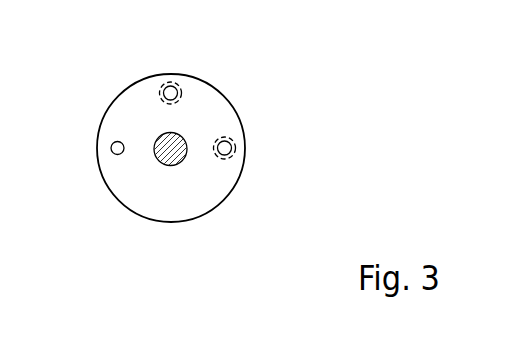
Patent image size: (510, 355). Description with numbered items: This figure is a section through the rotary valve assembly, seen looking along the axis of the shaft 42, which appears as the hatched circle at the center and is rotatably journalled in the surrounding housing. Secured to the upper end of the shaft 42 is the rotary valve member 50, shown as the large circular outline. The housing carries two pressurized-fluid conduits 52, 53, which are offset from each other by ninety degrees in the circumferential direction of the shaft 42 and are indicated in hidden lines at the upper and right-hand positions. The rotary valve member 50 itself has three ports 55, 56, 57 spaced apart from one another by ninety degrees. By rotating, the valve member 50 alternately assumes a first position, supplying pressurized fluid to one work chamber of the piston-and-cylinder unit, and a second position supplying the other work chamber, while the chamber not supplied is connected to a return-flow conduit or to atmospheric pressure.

The rotary valve member 50 is at (232, 108).
The shaft 42 is at (172, 166).
The port 56 is at (167, 87).
The pressurized-fluid conduit 53 is at (181, 88).
The port 55 is at (232, 143).
The pressurized-fluid conduit 52 is at (237, 165).
The port 57 is at (111, 148).